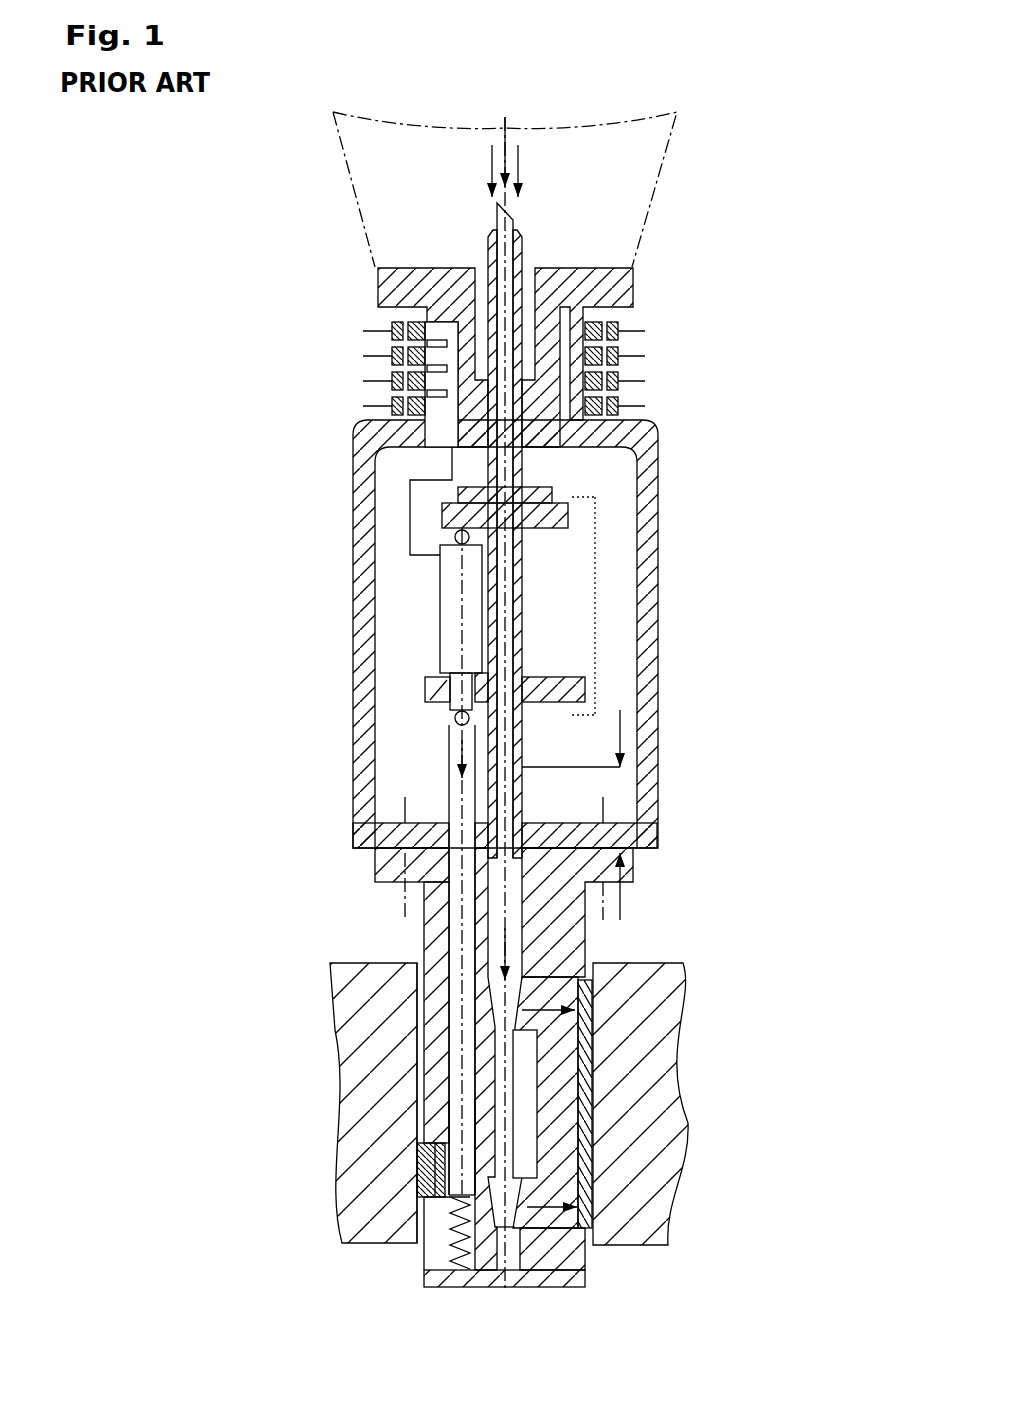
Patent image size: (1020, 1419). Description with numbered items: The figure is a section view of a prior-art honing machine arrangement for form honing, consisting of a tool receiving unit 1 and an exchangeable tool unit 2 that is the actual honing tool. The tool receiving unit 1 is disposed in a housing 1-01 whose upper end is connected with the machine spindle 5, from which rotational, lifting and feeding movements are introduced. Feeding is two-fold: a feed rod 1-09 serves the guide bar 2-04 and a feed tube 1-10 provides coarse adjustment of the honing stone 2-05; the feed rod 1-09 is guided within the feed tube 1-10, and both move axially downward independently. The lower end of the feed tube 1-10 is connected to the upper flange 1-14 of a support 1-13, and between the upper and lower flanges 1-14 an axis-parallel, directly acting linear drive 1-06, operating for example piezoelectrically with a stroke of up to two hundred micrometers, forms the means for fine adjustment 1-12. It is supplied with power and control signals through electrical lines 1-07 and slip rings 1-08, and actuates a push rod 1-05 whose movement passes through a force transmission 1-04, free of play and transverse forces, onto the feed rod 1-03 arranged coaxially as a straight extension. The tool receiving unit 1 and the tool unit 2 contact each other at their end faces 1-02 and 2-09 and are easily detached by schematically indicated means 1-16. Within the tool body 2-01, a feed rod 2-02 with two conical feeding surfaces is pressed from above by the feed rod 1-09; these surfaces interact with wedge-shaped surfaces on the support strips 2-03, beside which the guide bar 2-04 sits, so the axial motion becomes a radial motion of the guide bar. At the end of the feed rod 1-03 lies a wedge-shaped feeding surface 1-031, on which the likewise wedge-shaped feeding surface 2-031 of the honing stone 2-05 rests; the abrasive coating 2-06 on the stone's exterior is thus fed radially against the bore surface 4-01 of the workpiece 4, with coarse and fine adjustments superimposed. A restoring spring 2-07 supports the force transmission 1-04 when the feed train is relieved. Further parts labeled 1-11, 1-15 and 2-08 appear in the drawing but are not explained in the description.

The tool receiving unit 1 is at (203, 413).
The housing 1-01 is at (360, 800).
The end face 1-02 is at (368, 850).
The feed rod 1-03 is at (450, 760).
The force transmission 1-04 is at (455, 538).
The push rod 1-05 is at (425, 688).
The linear drive 1-06 is at (440, 588).
The electrical lines 1-07 is at (408, 488).
The slip rings 1-08 is at (306, 323).
The feed rod 1-09 is at (497, 207).
The feed tube 1-10 is at (488, 242).
The flange core 1-11 is at (563, 292).
The means for fine adjustment 1-12 is at (595, 565).
The support 1-13 is at (532, 613).
The flange 1-14 is at (560, 517).
The chamber 1-15 is at (623, 787).
The detachable connecting means 1-16 is at (403, 902).
The wedge-shaped feeding surface 1-031 is at (422, 1198).
The tool unit 2 is at (203, 975).
The tool body 2-01 is at (560, 917).
The feed rod 2-02 is at (513, 928).
The support strips 2-03 is at (565, 1060).
The feeding surface 2-031 is at (463, 1130).
The guide bar 2-04 is at (587, 1117).
The honing stone 2-05 is at (420, 1150).
The abrasive coating 2-06 is at (445, 1175).
The restoring spring 2-07 is at (427, 1260).
The bottom plate 2-08 is at (430, 1278).
The end face 2-09 is at (622, 851).
The workpiece 4 is at (372, 1012).
The bore surface 4-01 is at (437, 997).
The machine spindle 5 is at (620, 183).